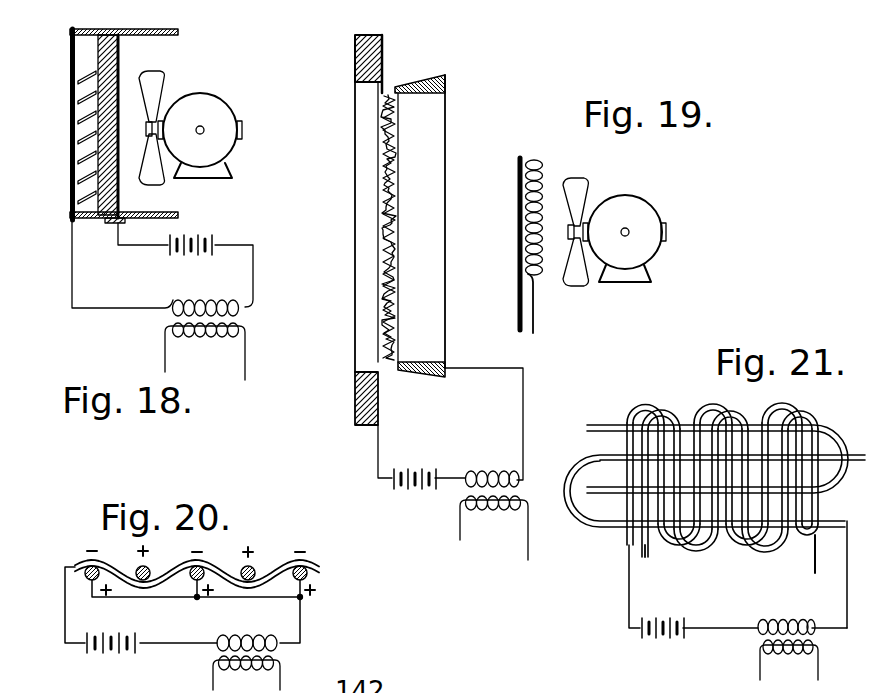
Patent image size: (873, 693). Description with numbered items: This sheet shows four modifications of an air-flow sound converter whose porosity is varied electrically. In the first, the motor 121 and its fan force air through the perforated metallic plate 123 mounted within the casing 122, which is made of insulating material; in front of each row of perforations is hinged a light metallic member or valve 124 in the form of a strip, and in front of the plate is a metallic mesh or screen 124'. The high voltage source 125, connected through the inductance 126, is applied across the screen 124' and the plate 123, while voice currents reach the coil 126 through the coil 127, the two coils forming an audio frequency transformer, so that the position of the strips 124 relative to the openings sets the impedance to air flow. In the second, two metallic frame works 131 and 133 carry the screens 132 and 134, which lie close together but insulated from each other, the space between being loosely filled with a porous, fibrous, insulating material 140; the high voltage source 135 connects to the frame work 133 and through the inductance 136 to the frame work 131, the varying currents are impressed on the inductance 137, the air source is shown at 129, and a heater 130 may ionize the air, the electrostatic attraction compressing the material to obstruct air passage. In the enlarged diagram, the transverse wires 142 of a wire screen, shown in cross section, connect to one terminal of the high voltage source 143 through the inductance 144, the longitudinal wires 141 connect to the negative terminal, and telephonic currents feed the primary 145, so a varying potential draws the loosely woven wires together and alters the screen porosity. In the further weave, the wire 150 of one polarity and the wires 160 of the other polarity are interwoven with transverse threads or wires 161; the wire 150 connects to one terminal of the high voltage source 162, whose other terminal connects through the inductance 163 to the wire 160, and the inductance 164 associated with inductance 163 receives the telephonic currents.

In FIG. 18, the motor 121 is at (236, 103).
In FIG. 18, the casing 122 is at (188, 23).
In FIG. 18, the perforated metallic plate 123 is at (130, 50).
In FIG. 18, the light metallic member or valve 124 is at (58, 107).
In FIG. 18, the screen 124' is at (60, 180).
In FIG. 18, the high voltage source 125 is at (226, 242).
In FIG. 18, the inductance 126 is at (235, 300).
In FIG. 18, the coil 127 is at (205, 351).
In FIG. 19, the air source 129 is at (659, 213).
In FIG. 19, the heater 130 is at (554, 171).
In FIG. 19, the metallic frame work 131 is at (455, 89).
In FIG. 19, the screen 132 is at (408, 157).
In FIG. 19, the metallic frame work 133 is at (392, 50).
In FIG. 19, the screen 134 is at (378, 256).
In FIG. 19, the high voltage source 135 is at (440, 468).
In FIG. 19, the inductance 136 is at (503, 468).
In FIG. 19, the inductance 137 is at (503, 518).
In FIG. 19, the porous fibrous insulating material 140 is at (395, 302).
In FIG. 20, the longitudinal wires 141 is at (322, 568).
In FIG. 20, the transverse wires 142 is at (305, 582).
In FIG. 20, the high voltage source 143 is at (128, 640).
In FIG. 20, the inductance 144 is at (241, 645).
In FIG. 20, the primary 145 is at (246, 674).
In FIG. 21, the wire 150 is at (677, 546).
In FIG. 21, the wires 160 is at (788, 544).
In FIG. 21, the transverse threads or wires 161 is at (645, 566).
In FIG. 21, the high voltage source 162 is at (672, 648).
In FIG. 21, the inductance 163 is at (791, 611).
In FIG. 21, the inductance 164 is at (791, 660).